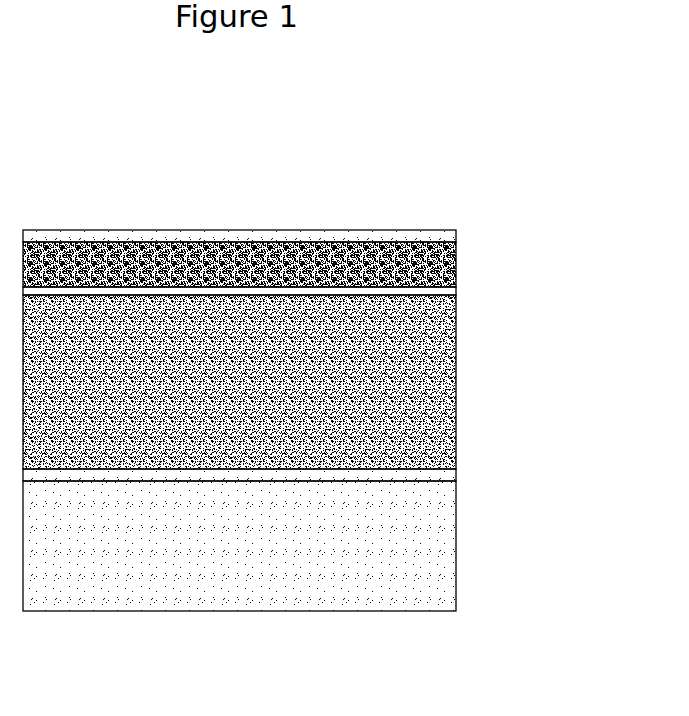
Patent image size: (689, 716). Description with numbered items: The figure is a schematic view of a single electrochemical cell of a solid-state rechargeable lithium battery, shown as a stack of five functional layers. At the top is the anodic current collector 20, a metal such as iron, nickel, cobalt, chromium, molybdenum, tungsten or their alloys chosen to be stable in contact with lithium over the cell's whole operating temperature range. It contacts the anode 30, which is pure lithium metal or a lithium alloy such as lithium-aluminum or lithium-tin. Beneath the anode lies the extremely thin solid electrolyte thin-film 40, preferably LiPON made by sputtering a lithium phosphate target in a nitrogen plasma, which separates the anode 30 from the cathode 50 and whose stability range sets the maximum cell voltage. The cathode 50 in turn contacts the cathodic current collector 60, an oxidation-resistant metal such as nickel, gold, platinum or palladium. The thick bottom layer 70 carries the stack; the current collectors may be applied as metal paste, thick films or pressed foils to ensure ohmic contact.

The anodic current collector 20 is at (465, 224).
The anode 30 is at (468, 270).
The solid electrolyte thin-film 40 is at (467, 294).
The cathode 50 is at (466, 389).
The cathodic current collector 60 is at (467, 478).
The substrate 70 is at (239, 546).